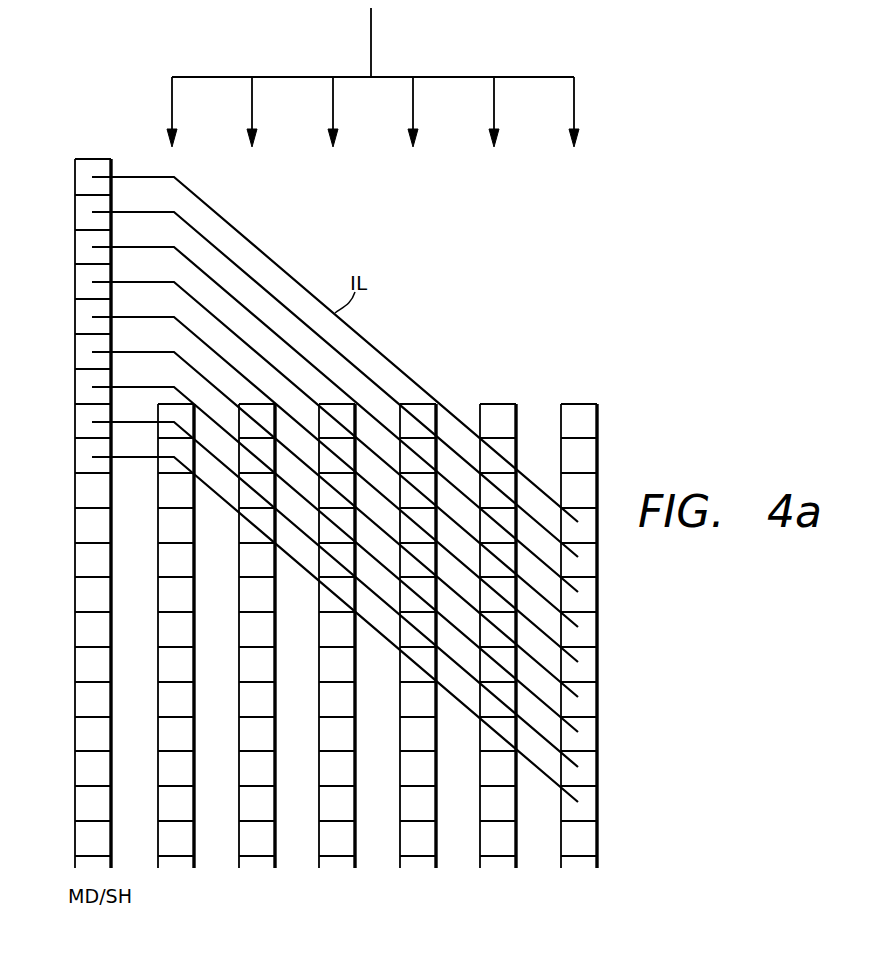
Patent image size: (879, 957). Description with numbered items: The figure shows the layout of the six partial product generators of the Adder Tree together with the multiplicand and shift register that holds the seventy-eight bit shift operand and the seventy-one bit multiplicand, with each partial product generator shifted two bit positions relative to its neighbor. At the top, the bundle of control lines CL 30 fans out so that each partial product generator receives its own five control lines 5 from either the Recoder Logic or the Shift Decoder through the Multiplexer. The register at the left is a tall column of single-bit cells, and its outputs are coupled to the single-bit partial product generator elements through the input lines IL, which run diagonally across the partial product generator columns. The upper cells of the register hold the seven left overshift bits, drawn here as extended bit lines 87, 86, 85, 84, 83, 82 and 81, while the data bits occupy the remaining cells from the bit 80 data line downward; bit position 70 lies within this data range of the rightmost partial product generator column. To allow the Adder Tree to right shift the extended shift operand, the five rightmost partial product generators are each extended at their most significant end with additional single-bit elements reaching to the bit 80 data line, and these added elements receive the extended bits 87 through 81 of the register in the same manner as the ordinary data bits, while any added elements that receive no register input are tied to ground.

The control lines CL 30 is at (383, 48).
The control lines per partial product generator 5 is at (183, 107).
The bit position line of the data path 70 is at (399, 656).
The bit 80 data line 80 is at (336, 586).
The extended bit 81 line 81 is at (306, 553).
The extended bit 82 line 82 is at (306, 518).
The extended bit 83 line 83 is at (306, 483).
The extended bit 84 line 84 is at (306, 448).
The extended bit 85 line 85 is at (306, 413).
The extended bit 86 line 86 is at (306, 378).
The extended bit 87 line 87 is at (306, 343).